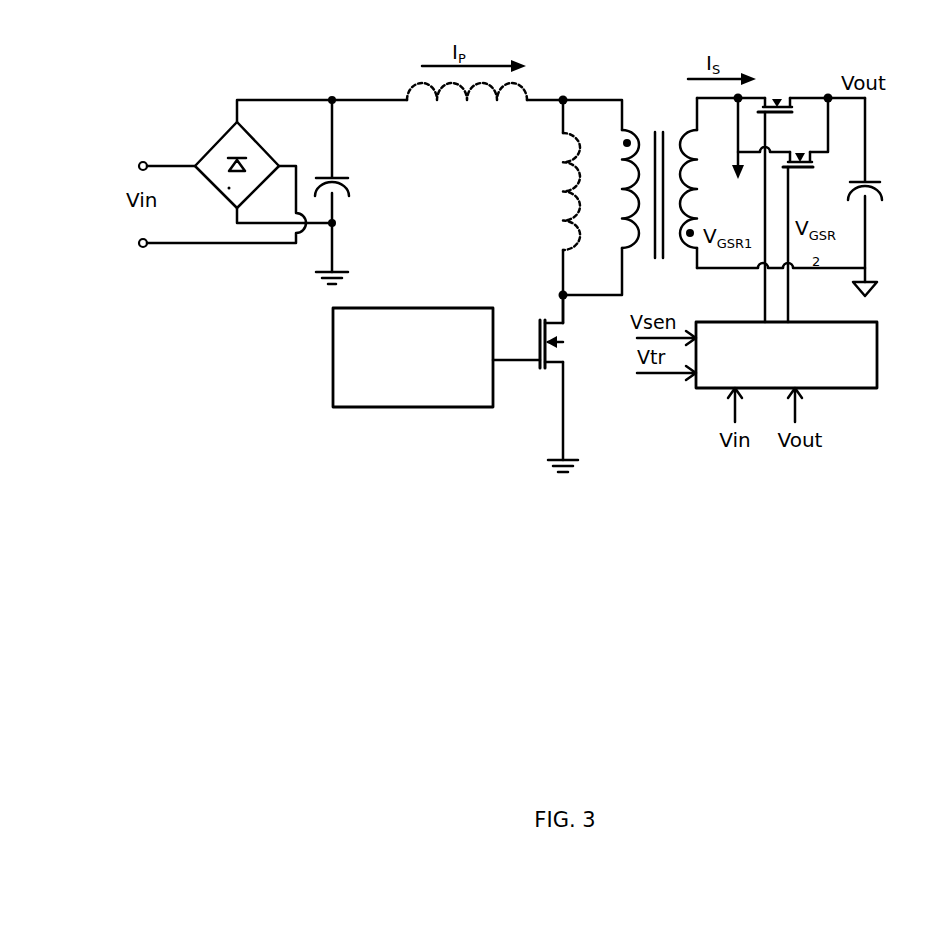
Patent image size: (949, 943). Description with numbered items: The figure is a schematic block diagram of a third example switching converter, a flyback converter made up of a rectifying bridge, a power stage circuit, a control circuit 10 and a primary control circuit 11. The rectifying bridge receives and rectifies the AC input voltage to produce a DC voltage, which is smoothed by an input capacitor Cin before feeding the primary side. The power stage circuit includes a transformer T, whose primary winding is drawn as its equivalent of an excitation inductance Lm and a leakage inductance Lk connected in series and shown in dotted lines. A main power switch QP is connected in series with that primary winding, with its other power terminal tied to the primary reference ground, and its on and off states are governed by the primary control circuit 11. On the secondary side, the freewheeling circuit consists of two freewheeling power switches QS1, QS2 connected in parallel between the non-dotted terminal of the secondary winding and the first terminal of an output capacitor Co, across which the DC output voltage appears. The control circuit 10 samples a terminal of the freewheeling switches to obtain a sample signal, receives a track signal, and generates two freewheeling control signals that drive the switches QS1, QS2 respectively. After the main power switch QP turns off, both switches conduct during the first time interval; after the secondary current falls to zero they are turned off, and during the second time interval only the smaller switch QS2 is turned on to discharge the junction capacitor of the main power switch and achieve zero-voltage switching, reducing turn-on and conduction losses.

The control circuit 10 is at (773, 383).
The primary control circuit 11 is at (426, 395).
The input capacitor Cin is at (351, 186).
The leakage inductance Lk is at (467, 104).
The excitation inductance Lm is at (547, 191).
The transformer T is at (659, 179).
The main power switch QP is at (533, 335).
The freewheeling power switch QS1 is at (775, 89).
The freewheeling power switch QS2 is at (796, 146).
The output capacitor Co is at (883, 190).